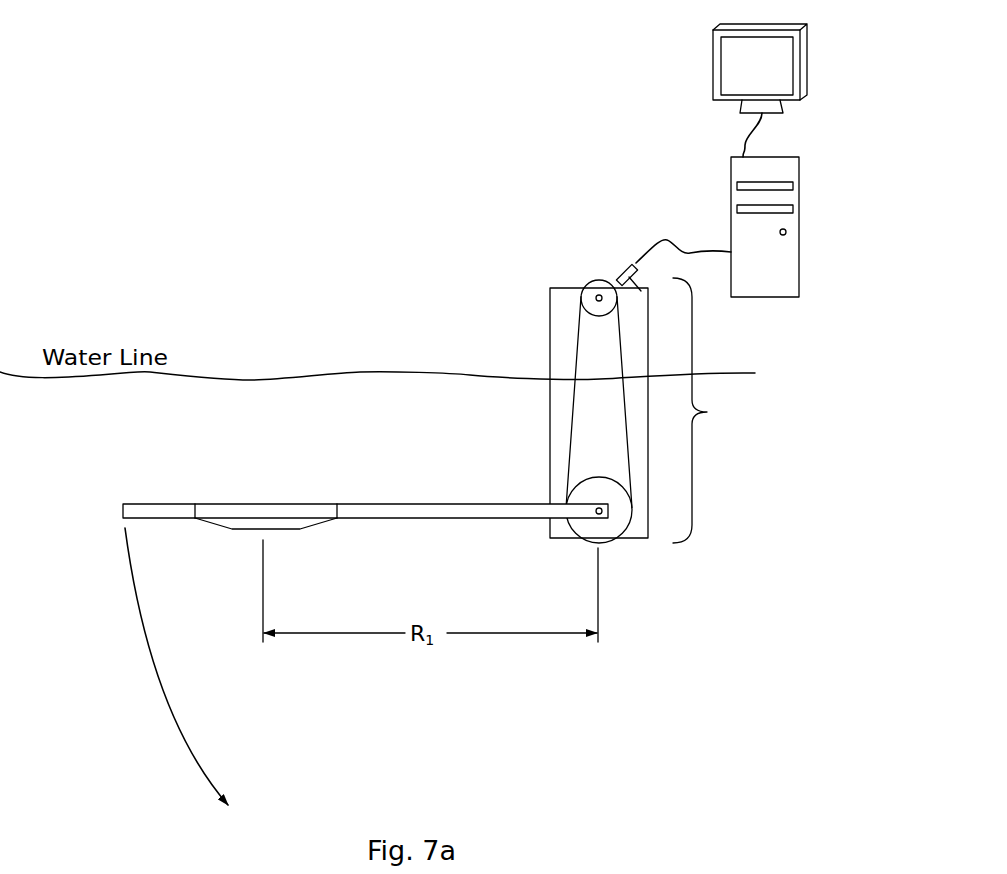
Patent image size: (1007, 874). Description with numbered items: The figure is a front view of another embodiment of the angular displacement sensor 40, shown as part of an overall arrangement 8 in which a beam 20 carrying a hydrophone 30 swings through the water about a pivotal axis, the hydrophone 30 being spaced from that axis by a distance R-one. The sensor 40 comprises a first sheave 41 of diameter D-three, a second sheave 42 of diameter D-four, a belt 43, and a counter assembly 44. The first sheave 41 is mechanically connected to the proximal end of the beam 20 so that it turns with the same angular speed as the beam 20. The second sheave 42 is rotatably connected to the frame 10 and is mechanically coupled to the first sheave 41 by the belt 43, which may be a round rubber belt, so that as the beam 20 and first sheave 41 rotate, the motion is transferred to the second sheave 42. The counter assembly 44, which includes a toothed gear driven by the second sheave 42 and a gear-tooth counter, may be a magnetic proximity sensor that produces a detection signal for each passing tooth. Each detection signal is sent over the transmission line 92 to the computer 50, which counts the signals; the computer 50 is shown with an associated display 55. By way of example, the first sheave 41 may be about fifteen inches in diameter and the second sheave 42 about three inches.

The measurement system 8 is at (240, 260).
The frame 10 is at (550, 332).
The beam 20 is at (413, 503).
The hydrophone 30 is at (250, 505).
The angular displacement sensor 40 is at (712, 410).
The first sheave 41 is at (607, 542).
The second sheave 42 is at (595, 280).
The belt 43 is at (578, 418).
The counter assembly 44 is at (627, 267).
The computer 50 is at (800, 227).
The monitor 55 is at (713, 75).
The transmission line 92 is at (707, 250).